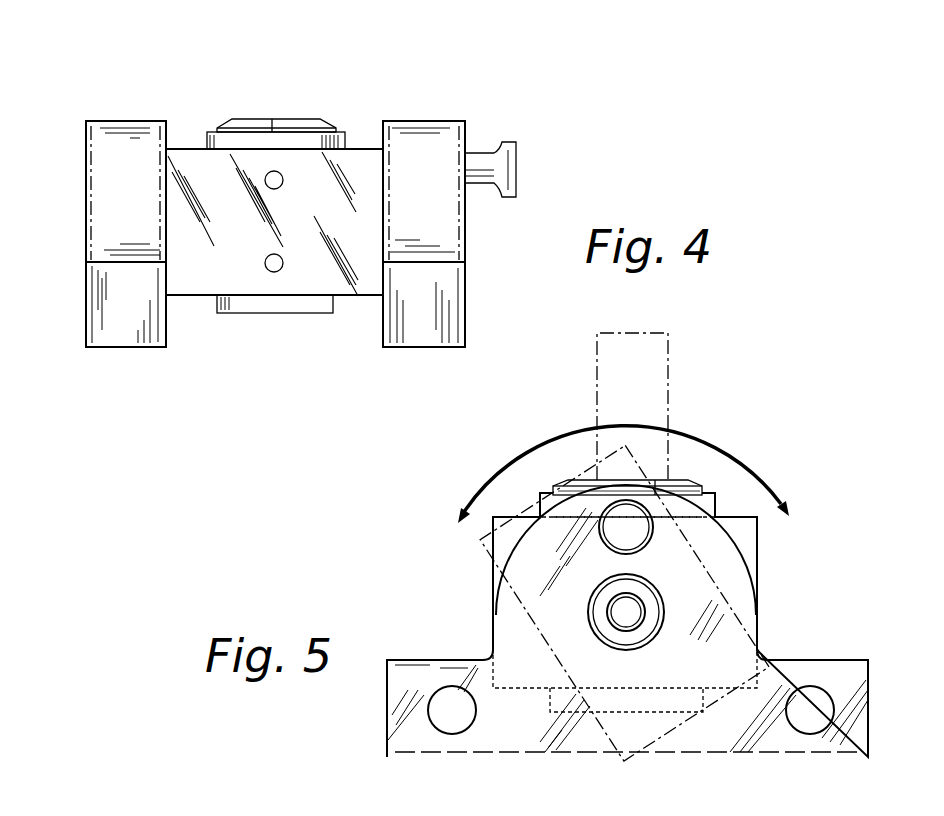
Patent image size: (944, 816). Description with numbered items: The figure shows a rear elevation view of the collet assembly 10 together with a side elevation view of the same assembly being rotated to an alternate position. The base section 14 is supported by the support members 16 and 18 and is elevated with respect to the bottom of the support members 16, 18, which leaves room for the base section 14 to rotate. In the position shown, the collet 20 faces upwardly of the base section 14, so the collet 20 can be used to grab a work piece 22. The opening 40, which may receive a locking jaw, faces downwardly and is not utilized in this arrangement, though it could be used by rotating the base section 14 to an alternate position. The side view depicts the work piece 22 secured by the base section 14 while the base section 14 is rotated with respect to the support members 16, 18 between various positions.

In FIG. 4, the assembly 10 is at (520, 86).
In FIG. 4, the base section 14 is at (355, 166).
In FIG. 5, the base section 14 is at (745, 538).
In FIG. 4, the support member 16 is at (452, 239).
In FIG. 5, the support member 16 is at (520, 573).
In FIG. 4, the support member 18 is at (103, 192).
In FIG. 4, the collet 20 is at (248, 118).
In FIG. 5, the work piece 22 is at (668, 371).
In FIG. 4, the opening 40 is at (290, 314).